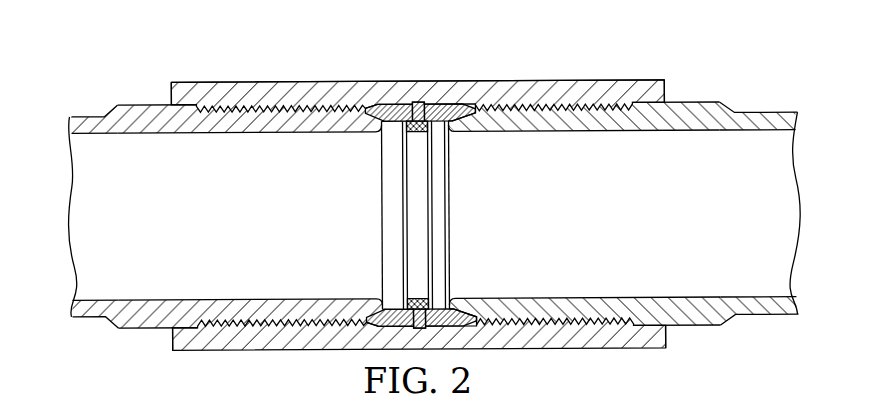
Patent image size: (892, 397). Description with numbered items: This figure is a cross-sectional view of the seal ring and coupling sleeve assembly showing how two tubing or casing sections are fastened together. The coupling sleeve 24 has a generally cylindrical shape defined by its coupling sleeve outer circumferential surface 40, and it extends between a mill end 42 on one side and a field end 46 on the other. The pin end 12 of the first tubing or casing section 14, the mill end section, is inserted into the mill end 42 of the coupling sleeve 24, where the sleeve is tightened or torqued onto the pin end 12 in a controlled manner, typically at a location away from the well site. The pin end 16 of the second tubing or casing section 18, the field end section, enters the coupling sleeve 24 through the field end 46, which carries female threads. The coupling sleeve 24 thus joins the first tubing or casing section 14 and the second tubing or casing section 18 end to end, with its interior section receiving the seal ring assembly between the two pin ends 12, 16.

The pin end 12 is at (702, 100).
The first tubing or casing section 14 is at (760, 100).
The pin end 16 is at (137, 103).
The second tubing or casing section 18 is at (71, 97).
The coupling sleeve 24 is at (521, 66).
The coupling sleeve outer circumferential surface 40 is at (275, 81).
The mill end 42 is at (666, 88).
The field end 46 is at (176, 94).